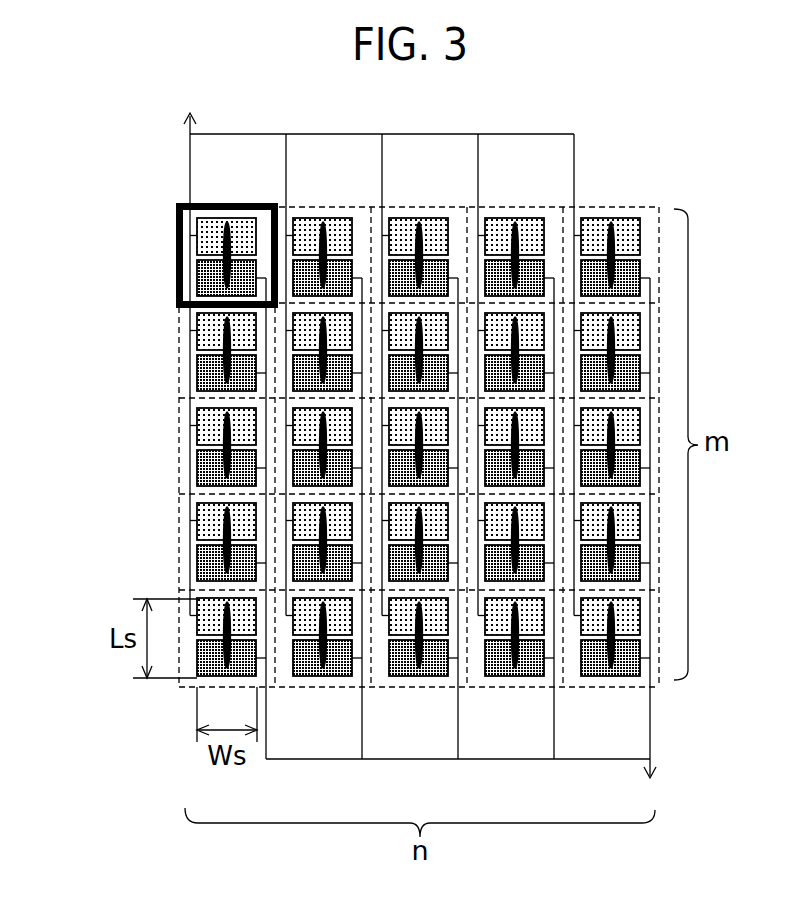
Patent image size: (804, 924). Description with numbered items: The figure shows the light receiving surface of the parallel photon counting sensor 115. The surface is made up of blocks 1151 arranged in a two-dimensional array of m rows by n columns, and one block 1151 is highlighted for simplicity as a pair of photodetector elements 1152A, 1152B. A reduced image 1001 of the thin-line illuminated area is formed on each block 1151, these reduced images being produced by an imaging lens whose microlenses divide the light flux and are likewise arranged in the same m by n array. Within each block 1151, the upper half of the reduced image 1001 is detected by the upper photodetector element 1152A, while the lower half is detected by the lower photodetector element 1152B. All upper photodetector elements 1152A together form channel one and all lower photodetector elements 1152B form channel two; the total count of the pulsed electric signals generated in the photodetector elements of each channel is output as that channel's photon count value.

The parallel photon counting sensor 115 is at (371, 448).
The block 1151 is at (176, 204).
The photodetector element 1152A is at (202, 242).
The photodetector element 1152B is at (202, 283).
The reduced image 1001 is at (229, 238).